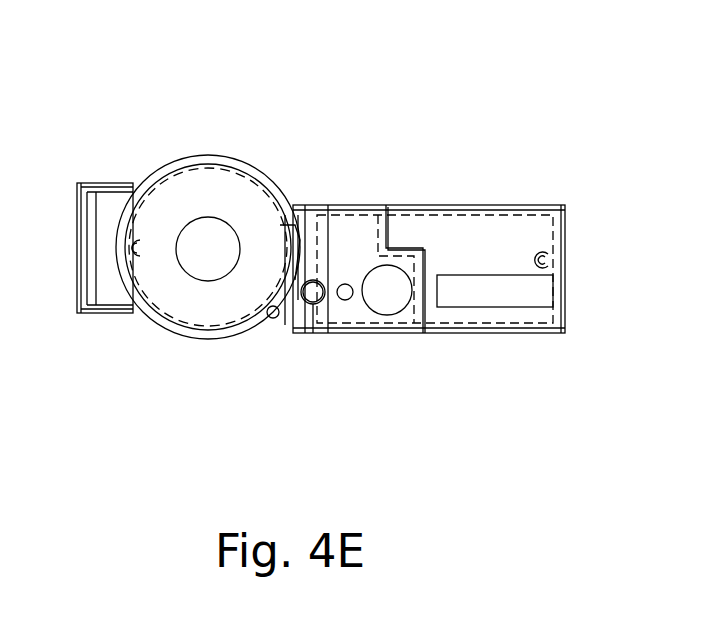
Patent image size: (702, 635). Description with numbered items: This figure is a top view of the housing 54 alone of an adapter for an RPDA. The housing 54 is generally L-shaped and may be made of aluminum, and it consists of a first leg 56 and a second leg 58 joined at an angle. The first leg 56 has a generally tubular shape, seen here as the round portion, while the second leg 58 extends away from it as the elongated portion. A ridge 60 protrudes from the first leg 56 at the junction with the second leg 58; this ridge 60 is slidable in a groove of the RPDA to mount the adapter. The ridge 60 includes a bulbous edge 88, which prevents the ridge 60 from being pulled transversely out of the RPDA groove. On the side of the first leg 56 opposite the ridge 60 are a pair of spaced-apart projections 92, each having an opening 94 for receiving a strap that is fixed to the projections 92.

The housing 54 is at (395, 140).
The first leg 56 is at (195, 307).
The second leg 58 is at (500, 228).
The ridge 60 is at (302, 293).
The bulbous edge 88 is at (318, 295).
The spaced-apart projections 92 is at (80, 315).
The opening 94 is at (115, 193).